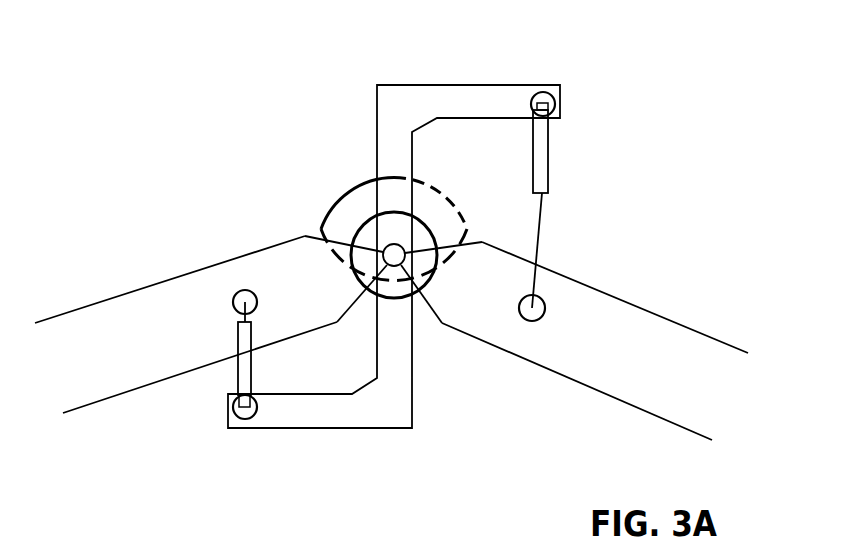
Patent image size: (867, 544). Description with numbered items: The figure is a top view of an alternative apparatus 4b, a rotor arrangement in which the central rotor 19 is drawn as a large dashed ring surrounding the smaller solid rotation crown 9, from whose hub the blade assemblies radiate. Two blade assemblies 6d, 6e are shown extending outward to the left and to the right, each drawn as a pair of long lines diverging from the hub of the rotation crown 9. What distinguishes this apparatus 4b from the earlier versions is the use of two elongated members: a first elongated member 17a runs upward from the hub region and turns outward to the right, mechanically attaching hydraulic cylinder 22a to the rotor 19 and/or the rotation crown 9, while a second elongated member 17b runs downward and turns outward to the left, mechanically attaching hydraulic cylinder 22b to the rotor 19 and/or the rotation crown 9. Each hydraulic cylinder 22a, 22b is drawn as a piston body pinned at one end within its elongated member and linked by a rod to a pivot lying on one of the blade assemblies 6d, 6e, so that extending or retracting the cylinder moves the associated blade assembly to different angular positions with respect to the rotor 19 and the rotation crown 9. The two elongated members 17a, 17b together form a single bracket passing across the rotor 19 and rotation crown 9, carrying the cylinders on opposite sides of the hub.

The apparatus 4b is at (208, 180).
The rotor 19 is at (355, 221).
The rotation crown 9 is at (428, 205).
The first elongated member 17a is at (498, 85).
The second elongated member 17b is at (307, 428).
The hydraulic cylinder 22a is at (548, 166).
The hydraulic cylinder 22b is at (240, 375).
The blade assembly 6d is at (94, 412).
The blade assembly 6e is at (725, 322).